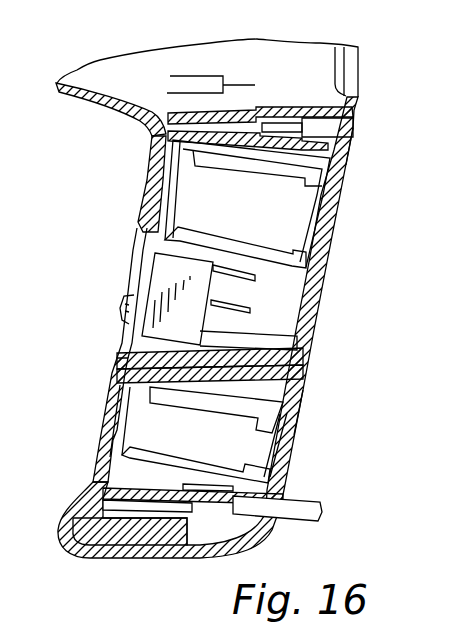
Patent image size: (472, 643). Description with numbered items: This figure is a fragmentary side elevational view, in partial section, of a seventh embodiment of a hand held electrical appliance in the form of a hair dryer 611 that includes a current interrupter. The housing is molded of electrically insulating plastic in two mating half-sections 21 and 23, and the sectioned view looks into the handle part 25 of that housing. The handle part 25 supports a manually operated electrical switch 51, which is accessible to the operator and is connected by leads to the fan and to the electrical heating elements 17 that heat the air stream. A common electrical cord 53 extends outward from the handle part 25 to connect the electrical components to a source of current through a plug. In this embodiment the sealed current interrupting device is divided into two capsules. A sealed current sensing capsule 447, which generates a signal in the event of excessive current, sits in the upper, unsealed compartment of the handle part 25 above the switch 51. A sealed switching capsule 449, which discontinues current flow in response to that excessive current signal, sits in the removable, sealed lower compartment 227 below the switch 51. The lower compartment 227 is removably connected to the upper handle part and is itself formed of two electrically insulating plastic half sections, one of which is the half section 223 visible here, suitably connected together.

The electrical heating elements 17 is at (266, 3).
The left half-section 21 is at (157, 147).
The right half-section 23 is at (348, 167).
The handle part 25 is at (360, 252).
The sealed current sensing capsule 447 is at (198, 195).
The manually operated electrical switch 51 is at (162, 273).
The hair dryer 611 is at (106, 352).
The half section 223 is at (297, 399).
The removable lower compartment 227 is at (298, 426).
The sealed switching capsule 449 is at (153, 422).
The electrical cord 53 is at (323, 498).